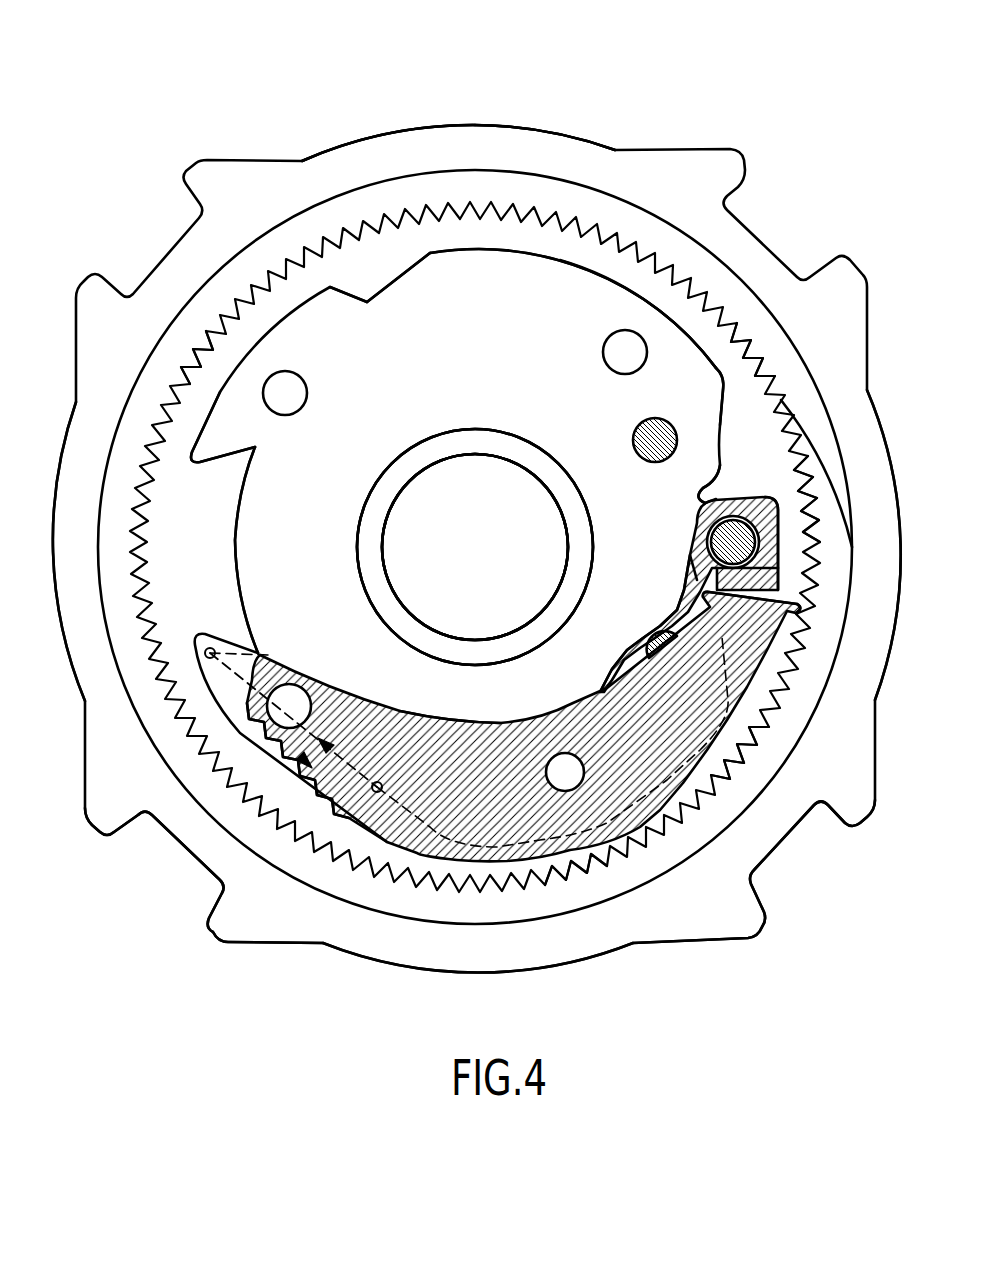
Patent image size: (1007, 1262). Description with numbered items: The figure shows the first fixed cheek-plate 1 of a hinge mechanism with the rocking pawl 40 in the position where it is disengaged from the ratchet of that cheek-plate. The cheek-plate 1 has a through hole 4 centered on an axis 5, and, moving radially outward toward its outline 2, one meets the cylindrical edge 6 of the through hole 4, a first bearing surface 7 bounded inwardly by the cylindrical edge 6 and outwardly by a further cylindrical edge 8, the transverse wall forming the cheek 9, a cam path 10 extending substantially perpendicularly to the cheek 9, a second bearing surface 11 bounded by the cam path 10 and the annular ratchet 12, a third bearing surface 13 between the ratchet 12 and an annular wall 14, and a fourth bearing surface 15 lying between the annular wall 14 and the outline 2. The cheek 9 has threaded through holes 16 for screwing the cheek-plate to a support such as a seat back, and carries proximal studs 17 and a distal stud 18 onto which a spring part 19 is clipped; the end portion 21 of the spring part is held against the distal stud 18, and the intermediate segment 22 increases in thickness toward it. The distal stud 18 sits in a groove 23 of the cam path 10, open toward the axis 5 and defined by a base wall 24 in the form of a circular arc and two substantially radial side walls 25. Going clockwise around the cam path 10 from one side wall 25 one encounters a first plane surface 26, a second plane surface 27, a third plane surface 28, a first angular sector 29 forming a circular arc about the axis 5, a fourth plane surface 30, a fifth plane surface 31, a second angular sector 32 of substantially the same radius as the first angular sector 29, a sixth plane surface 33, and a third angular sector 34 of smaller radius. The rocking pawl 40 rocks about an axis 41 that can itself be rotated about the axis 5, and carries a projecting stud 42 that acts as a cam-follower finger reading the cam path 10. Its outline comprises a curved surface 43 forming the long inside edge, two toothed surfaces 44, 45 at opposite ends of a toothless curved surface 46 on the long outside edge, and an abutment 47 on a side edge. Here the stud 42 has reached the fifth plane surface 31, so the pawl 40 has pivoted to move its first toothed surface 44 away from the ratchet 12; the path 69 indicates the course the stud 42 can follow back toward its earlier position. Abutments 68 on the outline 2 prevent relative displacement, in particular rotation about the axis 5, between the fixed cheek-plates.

The first fixed cheek-plate 1 is at (477, 486).
The outline 2 is at (477, 508).
The through hole 4 is at (475, 513).
The axis 5 is at (475, 547).
The cylindrical edge 6 is at (475, 510).
The first bearing surface 7 is at (475, 518).
The cylindrical edge 8 is at (475, 537).
The cheek 9 is at (556, 308).
The cam path 10 is at (457, 451).
The second bearing surface 11 is at (812, 450).
The annular ratchet 12 is at (471, 547).
The third bearing surface 13 is at (559, 138).
The annular wall 14 is at (475, 488).
The fourth bearing surface 15 is at (388, 125).
The threaded through holes 16 is at (455, 352).
The proximal studs 17 is at (638, 428).
The distal stud 18 is at (694, 531).
The spring part 19 is at (633, 628).
The end portion 21 is at (783, 590).
The intermediate segment 22 is at (648, 614).
The groove 23 is at (791, 517).
The base wall 24 is at (841, 499).
The side walls 25 is at (689, 563).
The first plane surface 26 is at (687, 483).
The second plane surface 27 is at (774, 340).
The third plane surface 28 is at (691, 392).
The first angular sector 29 is at (638, 266).
The fourth plane surface 30 is at (398, 263).
The fifth plane surface 31 is at (348, 271).
The second angular sector 32 is at (192, 358).
The sixth plane surface 33 is at (220, 455).
The third angular sector 34 is at (260, 550).
The rocking pawl 40 is at (523, 726).
The rocking axis 41 is at (565, 718).
The stud 42 is at (466, 742).
The curved surface 43 is at (470, 694).
The first toothed surface 44 is at (244, 760).
The second toothed surface 45 is at (779, 742).
The curved surface without teeth 46 is at (570, 906).
The abutment 47 is at (253, 738).
The abutments 68 is at (480, 871).
The path 69 is at (293, 714).